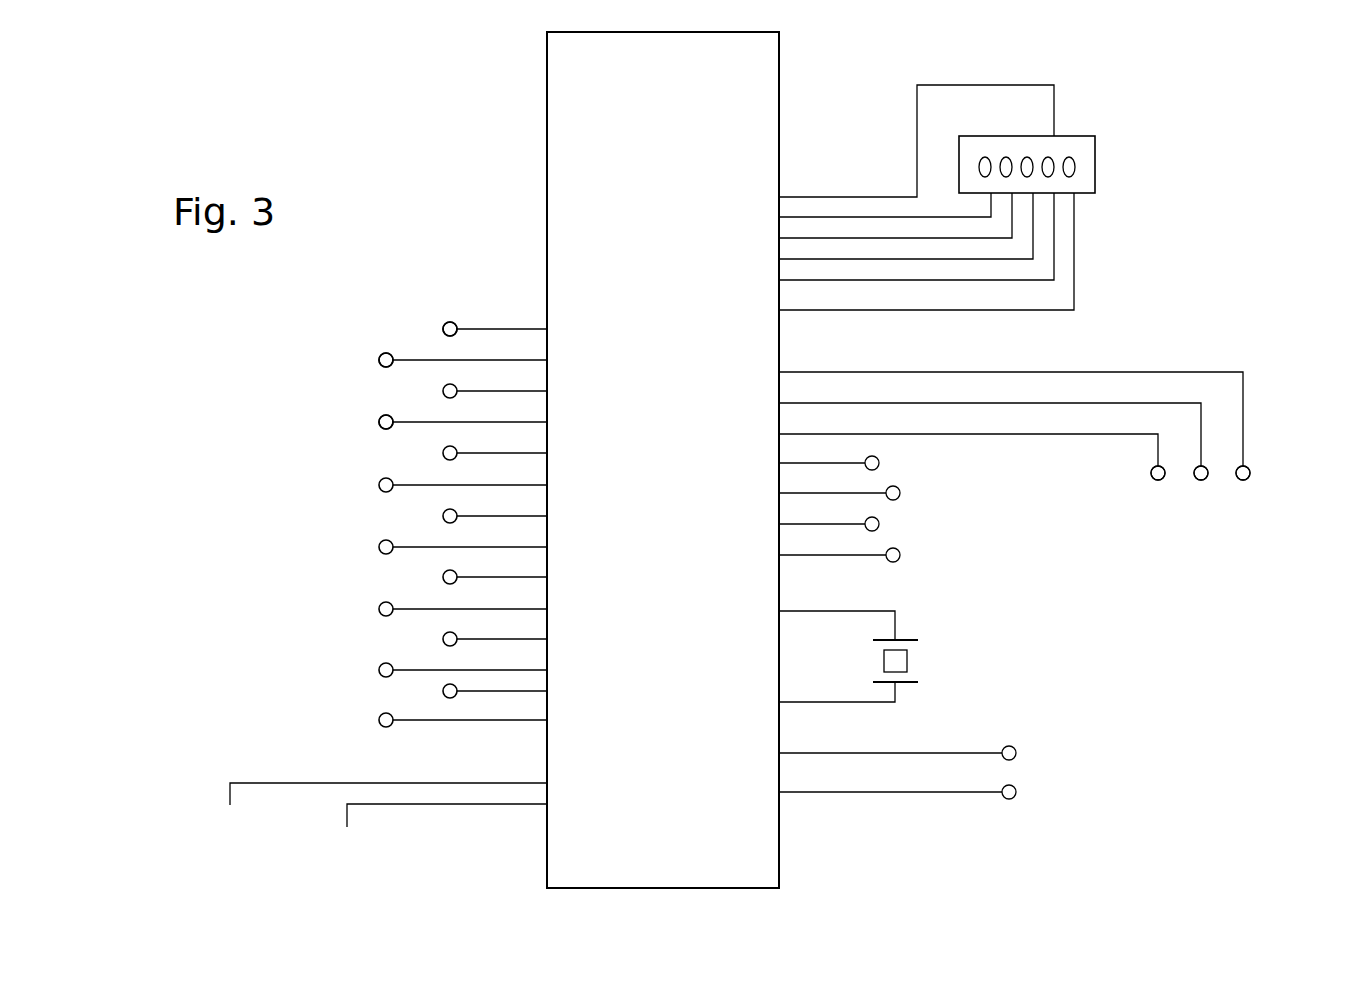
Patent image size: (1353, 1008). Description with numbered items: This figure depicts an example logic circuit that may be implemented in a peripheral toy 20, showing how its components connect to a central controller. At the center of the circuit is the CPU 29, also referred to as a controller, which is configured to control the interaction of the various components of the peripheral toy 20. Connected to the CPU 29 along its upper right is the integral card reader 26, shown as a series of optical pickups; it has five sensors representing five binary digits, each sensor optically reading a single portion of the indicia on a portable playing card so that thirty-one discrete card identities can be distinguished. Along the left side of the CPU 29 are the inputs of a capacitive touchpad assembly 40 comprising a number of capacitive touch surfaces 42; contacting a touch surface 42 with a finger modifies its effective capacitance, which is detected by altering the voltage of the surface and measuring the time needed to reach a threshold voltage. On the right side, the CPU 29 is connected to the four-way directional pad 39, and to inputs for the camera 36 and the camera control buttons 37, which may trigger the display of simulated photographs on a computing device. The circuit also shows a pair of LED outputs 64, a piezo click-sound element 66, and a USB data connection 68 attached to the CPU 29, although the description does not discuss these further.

The peripheral toy 20 is at (438, 168).
The integral card reader 26 is at (1088, 136).
The CPU 29 is at (733, 855).
The camera 36 is at (1278, 484).
The camera control buttons 37 is at (1180, 546).
The four-way directional pad 39 is at (922, 522).
The capacitive touchpad assembly 40 is at (263, 558).
The capacitive touch surface 42 is at (380, 419).
The LED indicators 64 is at (308, 804).
The piezo click sound element 66 is at (922, 630).
The USB data connection 68 is at (1038, 752).